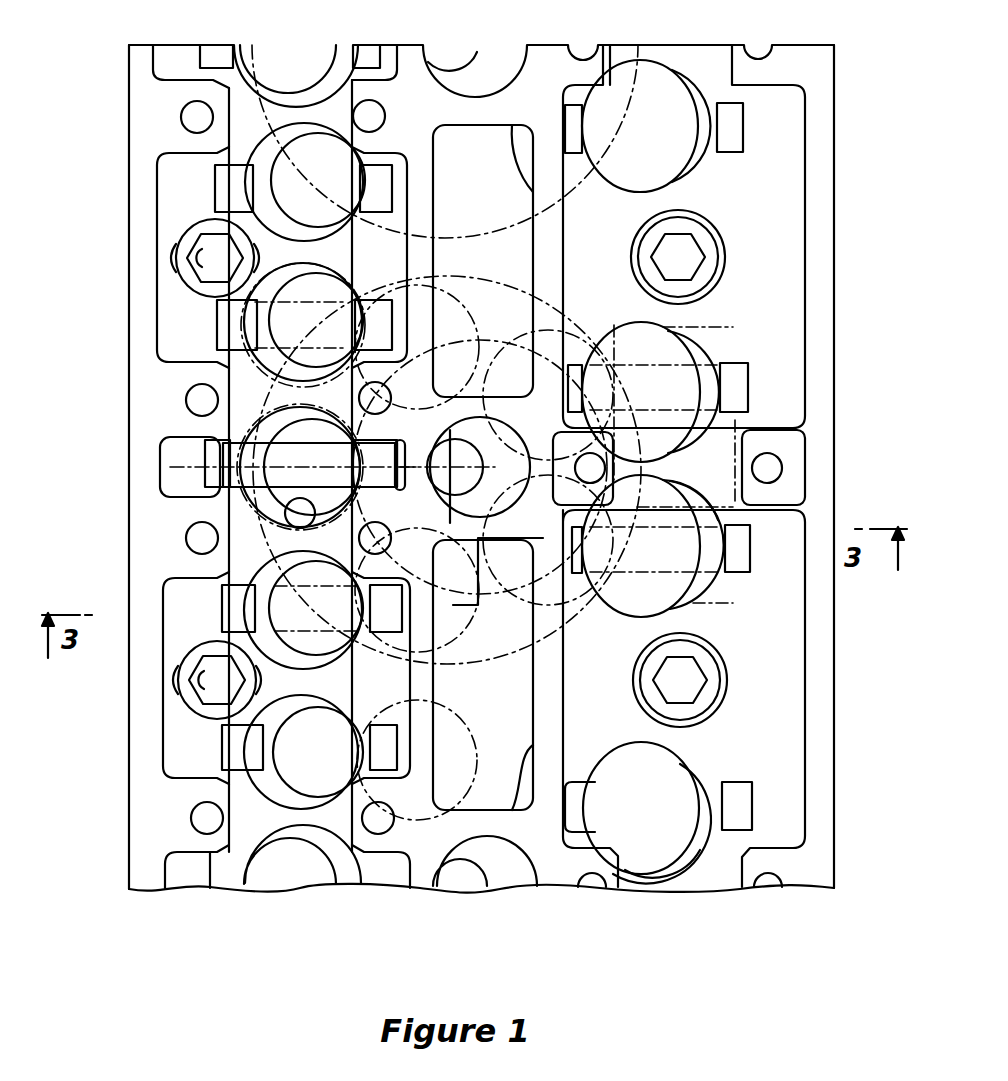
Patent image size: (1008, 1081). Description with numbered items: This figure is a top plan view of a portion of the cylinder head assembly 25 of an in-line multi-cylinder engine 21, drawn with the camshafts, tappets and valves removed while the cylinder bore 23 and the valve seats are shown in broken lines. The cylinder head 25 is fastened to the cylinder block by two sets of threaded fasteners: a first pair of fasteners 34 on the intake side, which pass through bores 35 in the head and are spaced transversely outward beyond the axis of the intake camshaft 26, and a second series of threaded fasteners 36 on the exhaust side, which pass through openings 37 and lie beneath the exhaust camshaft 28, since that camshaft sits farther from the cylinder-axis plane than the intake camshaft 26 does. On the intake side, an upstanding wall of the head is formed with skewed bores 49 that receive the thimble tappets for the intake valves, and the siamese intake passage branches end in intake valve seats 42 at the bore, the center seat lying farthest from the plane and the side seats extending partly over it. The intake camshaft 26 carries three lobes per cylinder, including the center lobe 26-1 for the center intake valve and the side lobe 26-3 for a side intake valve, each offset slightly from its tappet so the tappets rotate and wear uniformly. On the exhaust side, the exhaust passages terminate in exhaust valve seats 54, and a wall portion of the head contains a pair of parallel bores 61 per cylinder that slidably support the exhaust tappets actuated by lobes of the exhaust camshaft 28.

The engine 21 is at (845, 60).
The cylinder bore 23 is at (563, 222).
The cylinder head assembly 25 is at (110, 51).
The intake camshaft 26 is at (213, 375).
The center lobe 26-1 is at (283, 467).
The side lobe 26-3 is at (303, 191).
The exhaust camshaft 28 is at (750, 398).
The first pair of fasteners 34 is at (213, 240).
The bores 35 is at (202, 258).
The second series of threaded fasteners 36 is at (690, 257).
The openings 37 is at (700, 240).
The intake valve seats 42 is at (458, 308).
The bores 49 is at (268, 362).
The exhaust valve seats 54 is at (580, 328).
The parallel bores 61 is at (703, 355).